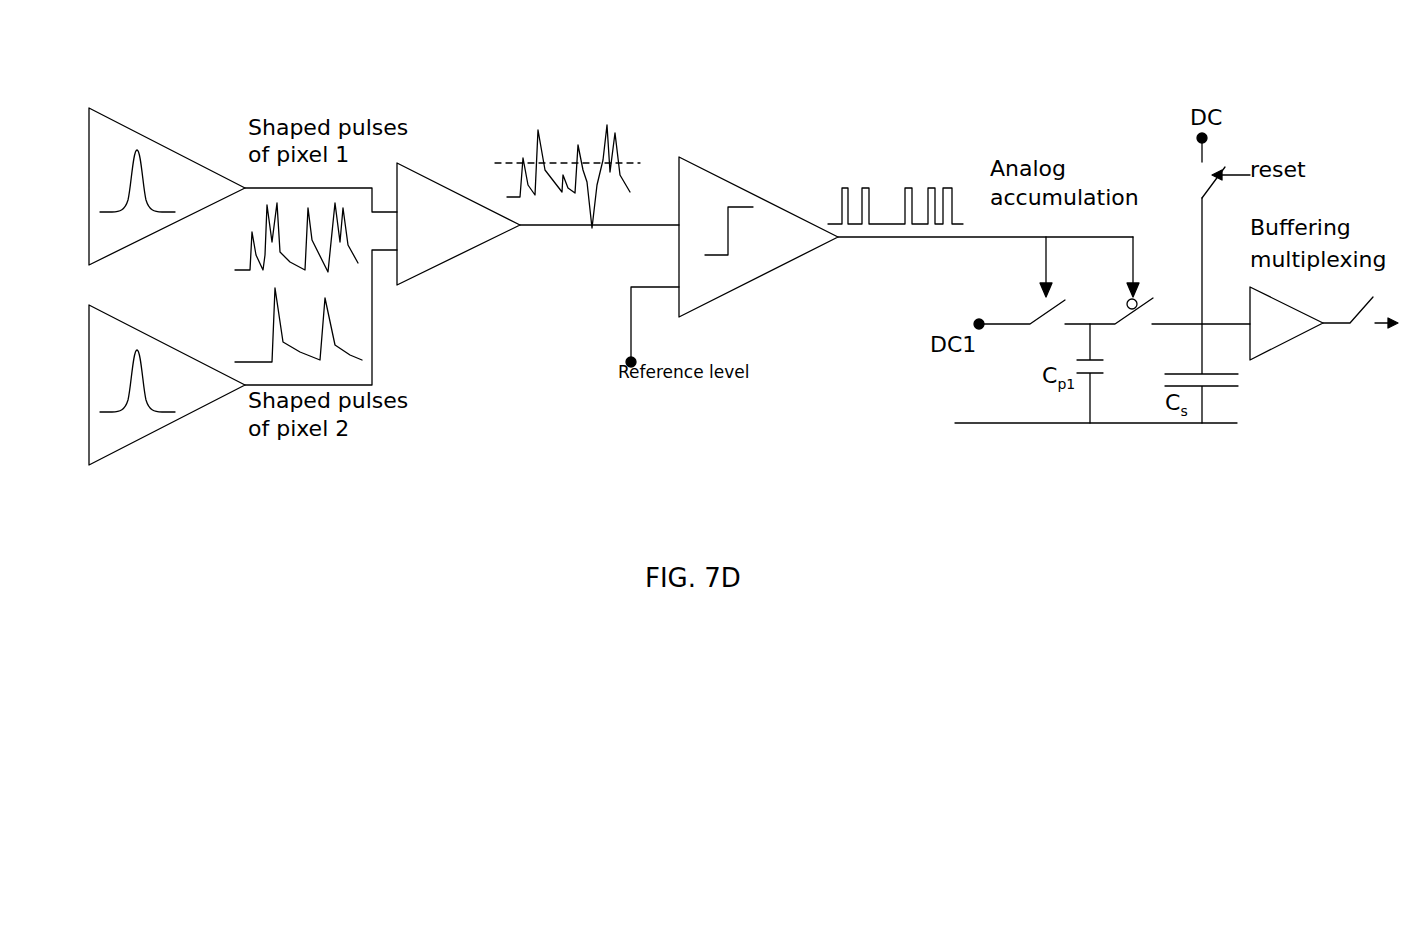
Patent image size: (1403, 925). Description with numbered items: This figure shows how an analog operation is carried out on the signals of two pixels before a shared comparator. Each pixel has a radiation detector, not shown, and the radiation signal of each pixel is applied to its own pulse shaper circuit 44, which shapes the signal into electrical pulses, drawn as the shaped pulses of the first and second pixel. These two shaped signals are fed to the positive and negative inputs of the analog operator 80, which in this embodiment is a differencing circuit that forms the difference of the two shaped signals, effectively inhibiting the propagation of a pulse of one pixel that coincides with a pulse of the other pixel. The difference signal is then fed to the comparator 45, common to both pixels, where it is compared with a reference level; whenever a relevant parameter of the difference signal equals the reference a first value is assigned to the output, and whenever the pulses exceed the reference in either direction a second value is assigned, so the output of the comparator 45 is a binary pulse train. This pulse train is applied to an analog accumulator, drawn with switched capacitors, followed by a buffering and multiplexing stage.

The pulse shaper circuit 44 is at (118, 145).
The analog operator 80 is at (407, 178).
The comparator 45 is at (703, 195).